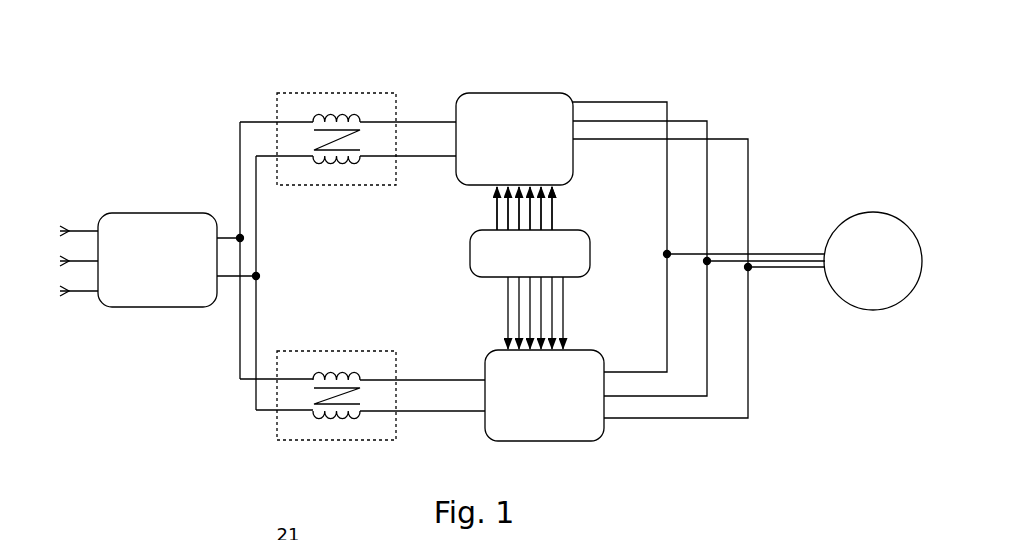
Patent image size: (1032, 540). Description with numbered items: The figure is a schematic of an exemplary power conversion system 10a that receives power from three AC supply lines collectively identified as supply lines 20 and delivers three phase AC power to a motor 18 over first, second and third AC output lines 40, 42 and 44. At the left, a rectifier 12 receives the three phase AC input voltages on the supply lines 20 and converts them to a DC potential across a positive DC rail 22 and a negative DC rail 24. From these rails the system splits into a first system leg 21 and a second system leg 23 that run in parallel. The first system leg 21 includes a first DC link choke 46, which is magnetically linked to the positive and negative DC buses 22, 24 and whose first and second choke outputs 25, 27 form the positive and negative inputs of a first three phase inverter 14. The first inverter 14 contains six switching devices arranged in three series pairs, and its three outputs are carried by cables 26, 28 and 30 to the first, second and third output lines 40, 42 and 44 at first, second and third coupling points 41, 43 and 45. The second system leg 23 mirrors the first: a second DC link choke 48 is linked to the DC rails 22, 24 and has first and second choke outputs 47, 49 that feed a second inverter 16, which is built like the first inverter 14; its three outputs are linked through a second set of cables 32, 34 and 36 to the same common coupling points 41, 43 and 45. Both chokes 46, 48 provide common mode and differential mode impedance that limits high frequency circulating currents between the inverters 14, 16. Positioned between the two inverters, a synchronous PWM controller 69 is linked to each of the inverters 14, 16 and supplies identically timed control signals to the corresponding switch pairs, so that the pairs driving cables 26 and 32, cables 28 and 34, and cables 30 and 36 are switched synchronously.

The power conversion system 10a is at (198, 118).
The rectifier 12 is at (155, 213).
The first three phase inverter 14 is at (520, 93).
The second inverter 16 is at (485, 362).
The motor 18 is at (873, 212).
The AC supply lines 20 is at (68, 219).
The first system leg 21 is at (317, 133).
The positive DC rail 22 is at (240, 327).
The second system leg 23 is at (291, 395).
The negative DC rail 24 is at (256, 353).
The first first choke output 25 is at (427, 123).
The first cable 26 is at (620, 102).
The second first choke output 27 is at (427, 156).
The second cable 28 is at (650, 121).
The third cable 30 is at (687, 139).
The first cable of second set 32 is at (643, 372).
The second cable of second set 34 is at (693, 396).
The third cable of second set 36 is at (740, 418).
The first AC output line 40 is at (782, 254).
The first coupling point 41 is at (665, 253).
The second AC output line 42 is at (798, 261).
The second coupling point 43 is at (705, 261).
The third AC output line 44 is at (808, 268).
The third coupling point 45 is at (750, 268).
The first DC link choke 46 is at (338, 186).
The first second choke output 47 is at (420, 379).
The second DC link choke 48 is at (335, 351).
The second second choke output 49 is at (433, 412).
The synchronous PWM controller 69 is at (470, 253).